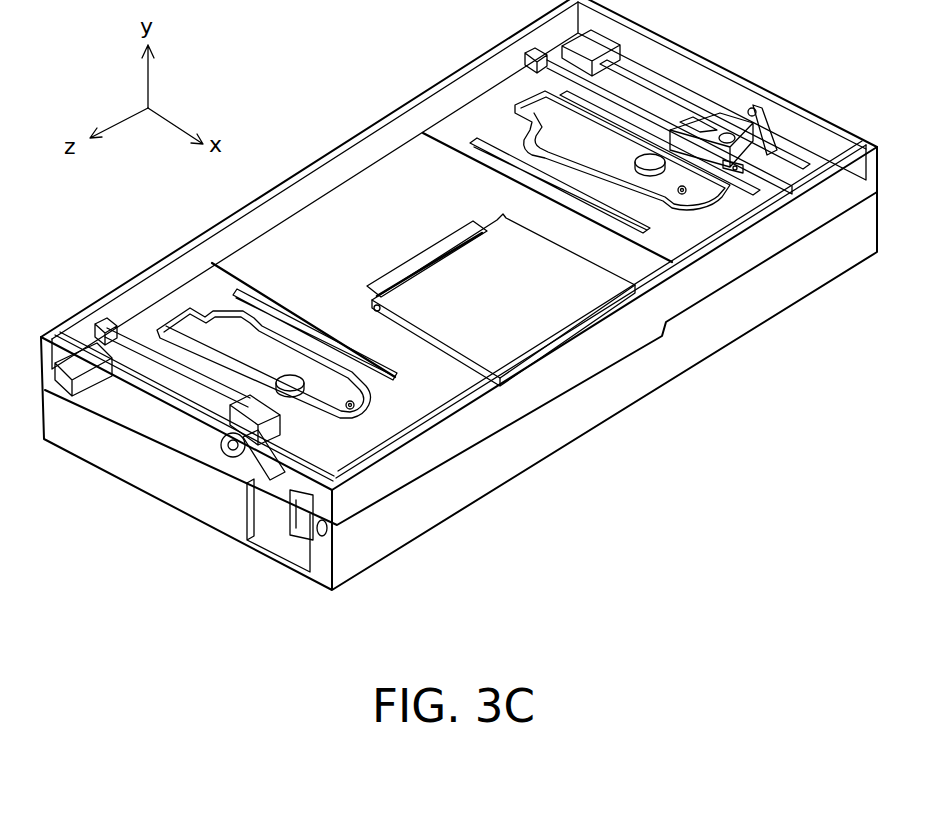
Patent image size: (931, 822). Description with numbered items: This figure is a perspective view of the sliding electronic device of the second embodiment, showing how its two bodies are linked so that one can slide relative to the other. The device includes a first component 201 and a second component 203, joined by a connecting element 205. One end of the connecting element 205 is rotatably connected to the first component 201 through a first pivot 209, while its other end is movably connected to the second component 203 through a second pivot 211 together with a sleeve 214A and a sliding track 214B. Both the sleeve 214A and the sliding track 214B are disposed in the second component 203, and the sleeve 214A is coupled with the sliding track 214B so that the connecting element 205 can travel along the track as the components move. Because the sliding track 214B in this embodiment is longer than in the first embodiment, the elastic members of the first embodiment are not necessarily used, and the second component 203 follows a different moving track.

The first component 201 is at (365, 558).
The second component 203 is at (150, 268).
The connecting element 205 is at (270, 470).
The first pivot 209 is at (302, 528).
The second pivot 211 is at (258, 428).
The sleeve 214A is at (240, 392).
The sliding track 214B is at (167, 363).